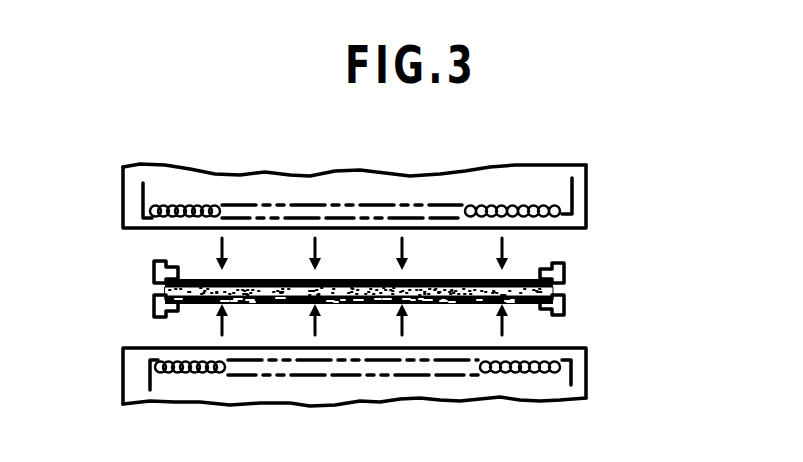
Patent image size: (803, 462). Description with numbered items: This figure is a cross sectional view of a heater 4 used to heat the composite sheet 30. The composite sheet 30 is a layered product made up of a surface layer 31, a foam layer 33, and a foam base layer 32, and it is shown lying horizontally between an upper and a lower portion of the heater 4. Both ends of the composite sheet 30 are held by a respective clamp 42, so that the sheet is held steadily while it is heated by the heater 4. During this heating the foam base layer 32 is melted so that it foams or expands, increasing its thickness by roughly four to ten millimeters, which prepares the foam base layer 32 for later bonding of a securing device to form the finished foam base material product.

The heater 4 is at (587, 212).
The composite sheet 30 is at (389, 284).
The surface layer 31 is at (502, 278).
The foam base layer 32 is at (513, 305).
The foam layer 33 is at (553, 289).
The clamp 42 is at (153, 262).